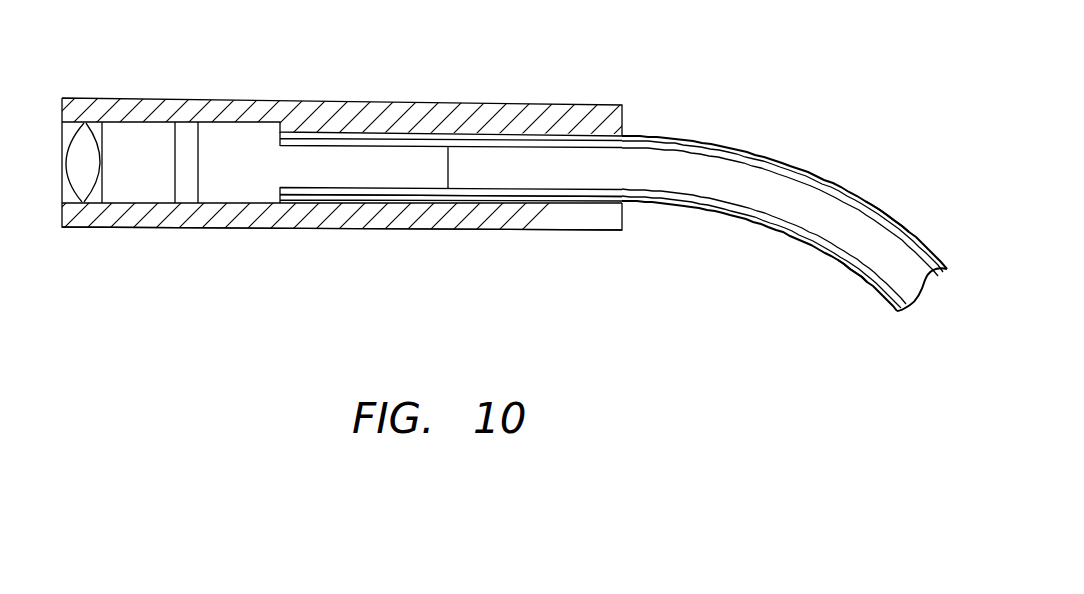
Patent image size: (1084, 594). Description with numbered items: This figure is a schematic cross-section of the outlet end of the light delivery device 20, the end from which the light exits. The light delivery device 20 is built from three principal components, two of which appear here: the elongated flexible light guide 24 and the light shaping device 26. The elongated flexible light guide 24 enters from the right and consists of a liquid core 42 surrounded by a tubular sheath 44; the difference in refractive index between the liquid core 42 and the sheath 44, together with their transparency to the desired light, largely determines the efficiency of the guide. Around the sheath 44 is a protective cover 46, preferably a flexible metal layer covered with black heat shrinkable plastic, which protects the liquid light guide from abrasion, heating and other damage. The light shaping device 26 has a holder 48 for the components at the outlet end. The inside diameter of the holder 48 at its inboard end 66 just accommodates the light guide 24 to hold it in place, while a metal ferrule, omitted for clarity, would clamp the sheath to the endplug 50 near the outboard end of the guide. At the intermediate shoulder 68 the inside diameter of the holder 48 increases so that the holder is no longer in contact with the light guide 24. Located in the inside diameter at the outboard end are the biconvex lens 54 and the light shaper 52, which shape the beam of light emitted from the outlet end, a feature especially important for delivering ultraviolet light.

The light delivery device 20 is at (668, 278).
The elongated flexible light guide 24 is at (857, 290).
The light shaping device 26 is at (302, 232).
The liquid core 42 is at (743, 173).
The tubular sheath 44 is at (827, 188).
The protective cover 46 is at (884, 208).
The holder 48 is at (262, 98).
The endplug 50 is at (350, 162).
The light shaper 52 is at (198, 153).
The biconvex lens 54 is at (105, 126).
The inboard end 66 is at (628, 120).
The intermediate shoulder 68 is at (330, 198).